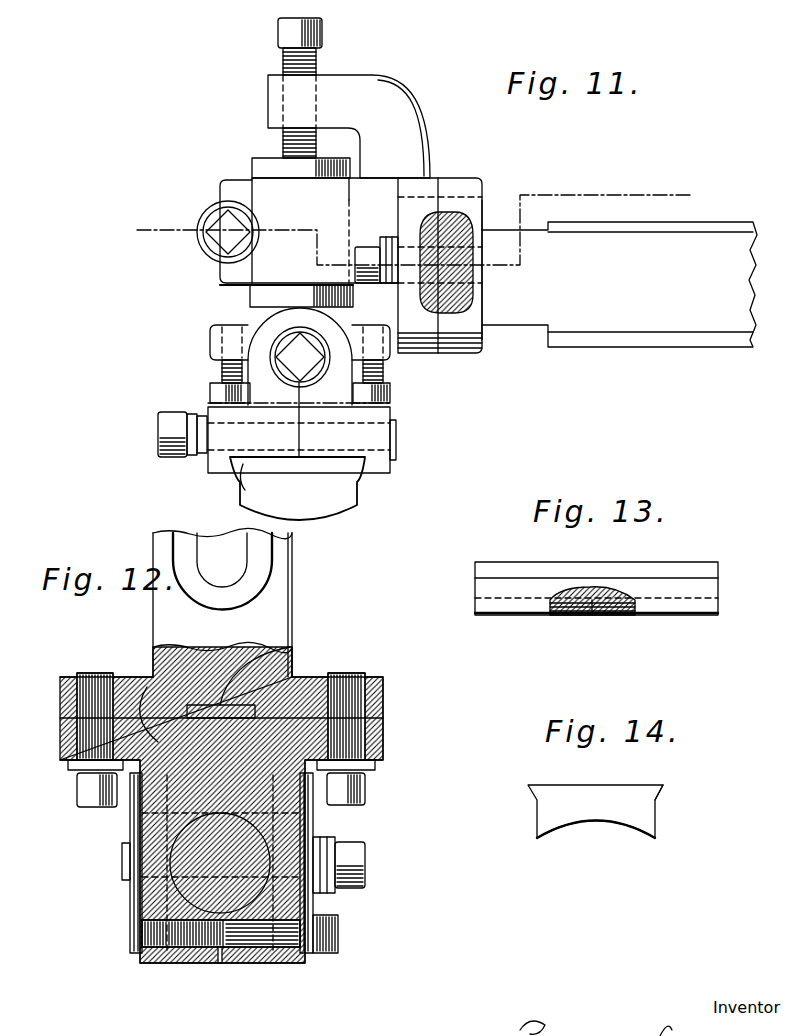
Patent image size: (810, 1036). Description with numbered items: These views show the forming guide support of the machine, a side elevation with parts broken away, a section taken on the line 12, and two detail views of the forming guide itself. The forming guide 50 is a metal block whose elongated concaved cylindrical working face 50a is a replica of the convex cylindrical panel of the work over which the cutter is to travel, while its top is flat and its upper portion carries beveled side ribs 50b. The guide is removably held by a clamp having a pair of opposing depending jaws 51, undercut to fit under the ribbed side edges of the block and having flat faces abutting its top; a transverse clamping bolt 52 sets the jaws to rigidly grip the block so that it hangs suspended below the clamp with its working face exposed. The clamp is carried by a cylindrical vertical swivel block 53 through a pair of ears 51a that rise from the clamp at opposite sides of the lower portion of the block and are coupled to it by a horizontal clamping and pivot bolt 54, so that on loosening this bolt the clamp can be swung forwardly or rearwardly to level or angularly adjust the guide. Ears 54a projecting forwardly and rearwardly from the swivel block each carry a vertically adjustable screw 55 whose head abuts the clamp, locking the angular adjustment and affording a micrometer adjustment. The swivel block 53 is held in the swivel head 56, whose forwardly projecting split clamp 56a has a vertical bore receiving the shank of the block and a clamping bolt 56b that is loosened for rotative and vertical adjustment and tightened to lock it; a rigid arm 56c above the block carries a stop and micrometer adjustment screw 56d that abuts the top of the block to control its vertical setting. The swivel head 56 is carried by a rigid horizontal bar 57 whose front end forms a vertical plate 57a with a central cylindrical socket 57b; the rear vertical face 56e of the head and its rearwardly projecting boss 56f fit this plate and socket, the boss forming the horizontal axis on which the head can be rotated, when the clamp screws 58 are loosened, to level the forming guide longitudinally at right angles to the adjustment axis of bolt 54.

In FIG. 11, the section line 12 is at (407, 224).
In FIG. 11, the forming guide 50 is at (350, 518).
In FIG. 13, the forming guide 50 is at (482, 587).
In FIG. 14, the forming guide 50 is at (635, 810).
In FIG. 13, the concaved cylindrical working face 50a is at (590, 618).
In FIG. 14, the concaved cylindrical working face 50a is at (592, 822).
In FIG. 11, the beveled side ribs 50b is at (242, 468).
In FIG. 13, the beveled side ribs 50b is at (668, 576).
In FIG. 14, the beveled side ribs 50b is at (663, 785).
In FIG. 11, the depending jaws 51 is at (207, 462).
In FIG. 11, the ears 51a is at (328, 330).
In FIG. 12, the ears 51a is at (132, 892).
In FIG. 11, the transverse clamping bolt 52 is at (162, 424).
In FIG. 11, the swivel block 53 is at (258, 322).
In FIG. 12, the swivel block 53 is at (207, 838).
In FIG. 11, the clamping and pivot bolt 54 is at (300, 355).
In FIG. 12, the clamping and pivot bolt 54 is at (353, 853).
In FIG. 11, the ears 54a is at (210, 336).
In FIG. 11, the vertically adjustable screw 55 is at (222, 384).
In FIG. 11, the swivel head 56 is at (418, 187).
In FIG. 12, the swivel head 56 is at (145, 690).
In FIG. 11, the split clamp 56a is at (262, 192).
In FIG. 12, the split clamp 56a is at (257, 965).
In FIG. 11, the clamping bolt 56b is at (230, 218).
In FIG. 12, the clamping bolt 56b is at (340, 937).
In FIG. 11, the rigid arm 56c is at (375, 102).
In FIG. 11, the stop and micrometer adjustment screw 56d is at (316, 60).
In FIG. 11, the vertical face 56e is at (465, 232).
In FIG. 12, the vertical face 56e is at (147, 687).
In FIG. 11, the boss 56f is at (425, 238).
In FIG. 12, the boss 56f is at (205, 705).
In FIG. 11, the bracket arm or bar 57 is at (605, 312).
In FIG. 12, the bracket arm or bar 57 is at (272, 586).
In FIG. 11, the vertical plate 57a is at (490, 182).
In FIG. 12, the vertical plate 57a is at (305, 695).
In FIG. 11, the socket 57b is at (483, 220).
In FIG. 12, the socket 57b is at (268, 658).
In FIG. 12, the clamp screws or bolts 58 is at (80, 792).